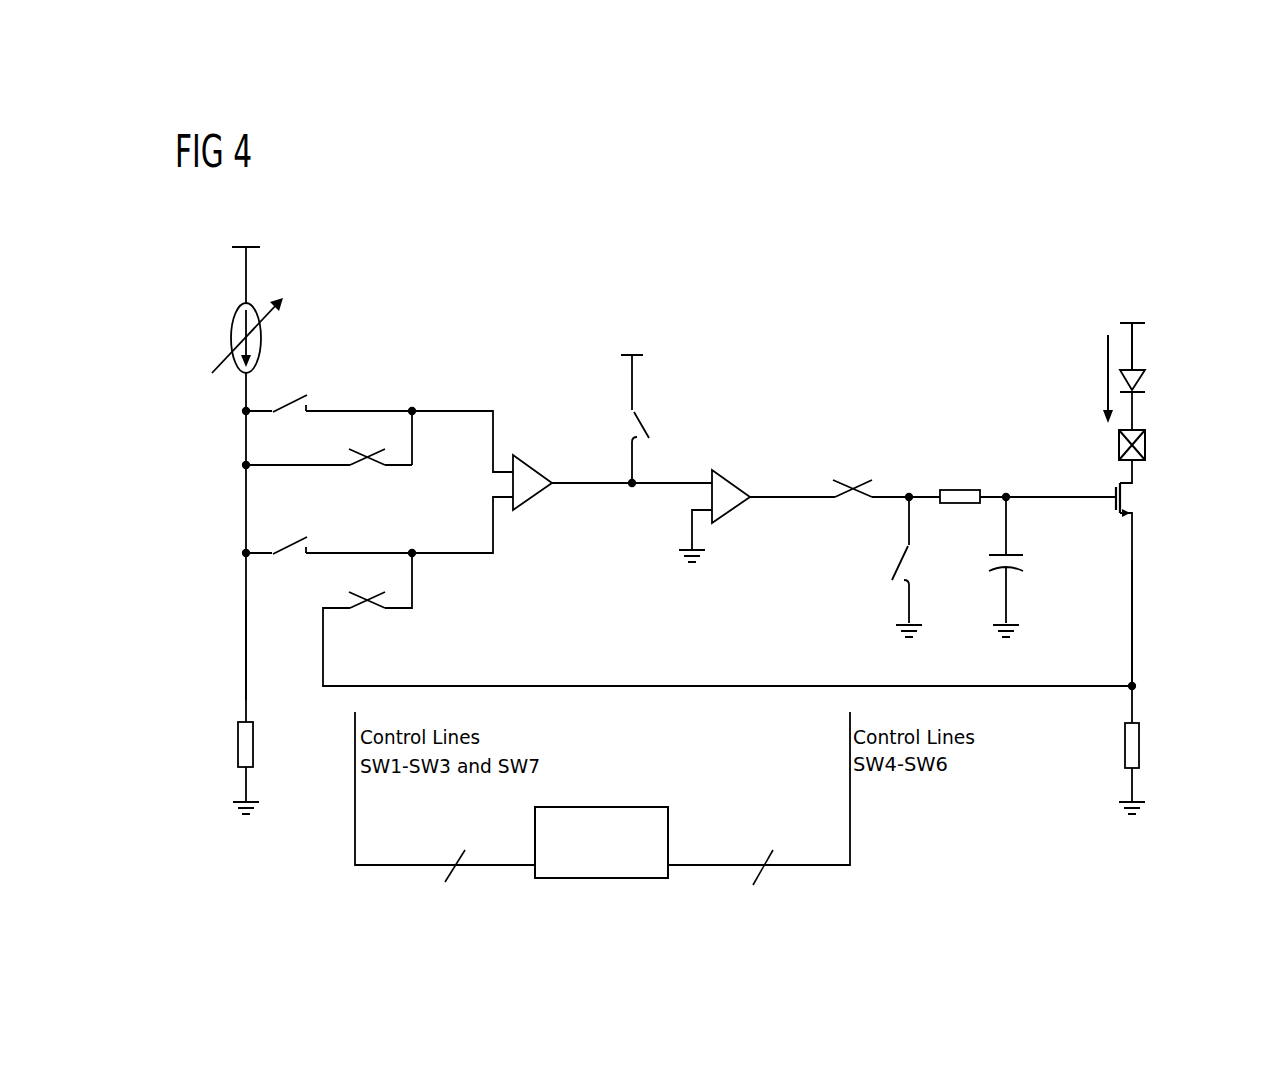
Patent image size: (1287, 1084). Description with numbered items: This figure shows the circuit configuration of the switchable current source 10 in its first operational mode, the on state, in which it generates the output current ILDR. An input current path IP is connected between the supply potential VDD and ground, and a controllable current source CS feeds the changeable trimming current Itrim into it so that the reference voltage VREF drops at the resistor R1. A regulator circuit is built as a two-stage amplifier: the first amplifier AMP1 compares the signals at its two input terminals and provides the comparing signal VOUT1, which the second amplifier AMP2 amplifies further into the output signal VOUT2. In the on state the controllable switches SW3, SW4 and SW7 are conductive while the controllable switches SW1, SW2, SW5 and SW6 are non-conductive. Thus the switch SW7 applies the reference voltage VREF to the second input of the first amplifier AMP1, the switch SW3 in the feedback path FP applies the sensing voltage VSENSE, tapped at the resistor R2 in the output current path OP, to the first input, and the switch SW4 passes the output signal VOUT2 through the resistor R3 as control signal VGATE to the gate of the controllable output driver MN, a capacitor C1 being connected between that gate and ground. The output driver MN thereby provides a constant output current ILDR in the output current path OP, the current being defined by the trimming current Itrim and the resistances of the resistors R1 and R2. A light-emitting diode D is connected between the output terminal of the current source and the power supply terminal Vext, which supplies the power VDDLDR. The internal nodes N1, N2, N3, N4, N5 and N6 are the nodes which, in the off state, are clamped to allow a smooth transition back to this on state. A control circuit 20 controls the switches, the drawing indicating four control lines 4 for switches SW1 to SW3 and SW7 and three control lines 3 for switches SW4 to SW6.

The switchable current source 10 is at (800, 357).
The control circuit 20 is at (670, 840).
The controllable current source CS is at (231, 337).
The changeable current Itrim is at (262, 318).
The supply potential VDD is at (244, 231).
The reference voltage VREF is at (215, 466).
The input current path IP is at (234, 650).
The controllable switch SW1 is at (300, 537).
The controllable switch SW2 is at (290, 397).
The controllable switch SW3 is at (370, 613).
The controllable switch SW4 is at (858, 480).
The controllable switch SW5 is at (895, 562).
The controllable switch SW6 is at (648, 420).
The controllable switch SW7 is at (370, 470).
The internal node N1 is at (412, 551).
The internal node N2 is at (412, 409).
The internal node N3 is at (634, 487).
The internal node N4 is at (909, 495).
The internal node N5 is at (1006, 495).
The internal node N6 is at (1135, 687).
The first amplifier AMP1 is at (530, 468).
The second amplifier AMP2 is at (735, 468).
The comparing signal VOUT1 is at (672, 470).
The output signal VOUT2 is at (792, 484).
The resistor R1 is at (255, 745).
The resistor R2 is at (1140, 746).
The resistor R3 is at (960, 489).
The capacitor C1 is at (990, 570).
The control signal VGATE is at (1061, 483).
The controllable output driver MN is at (1124, 498).
The light-emitting diode D is at (1147, 385).
The power supply terminal Vext is at (1135, 343).
The power VDDLDR is at (1132, 308).
The output current ILDR is at (1085, 379).
The output current path OP is at (1133, 607).
The sensing voltage VSENSE is at (1016, 669).
The feedback path FP is at (750, 707).
The four control lines 4 is at (456, 875).
The three control lines 3 is at (764, 875).